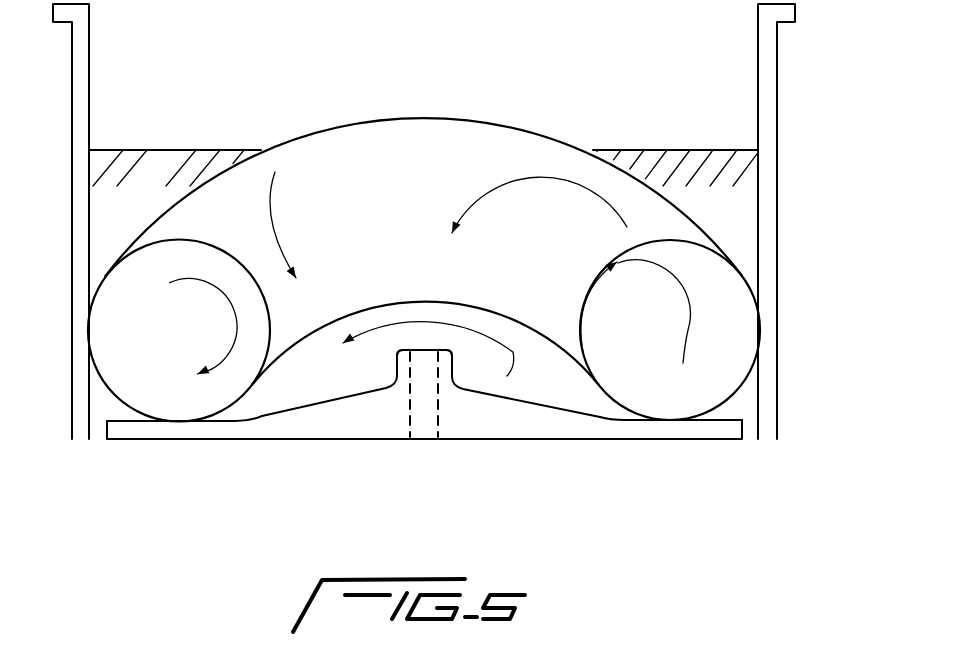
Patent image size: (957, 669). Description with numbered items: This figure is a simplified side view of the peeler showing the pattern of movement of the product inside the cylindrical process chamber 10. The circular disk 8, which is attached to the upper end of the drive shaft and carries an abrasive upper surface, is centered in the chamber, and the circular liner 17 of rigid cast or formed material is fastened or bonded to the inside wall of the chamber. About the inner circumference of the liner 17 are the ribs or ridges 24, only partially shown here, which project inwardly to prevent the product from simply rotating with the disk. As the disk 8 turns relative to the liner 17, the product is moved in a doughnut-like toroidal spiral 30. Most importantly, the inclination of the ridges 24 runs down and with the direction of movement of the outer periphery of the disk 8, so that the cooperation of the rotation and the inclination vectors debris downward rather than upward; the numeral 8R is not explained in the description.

The cylindrical process chamber 10 is at (727, 107).
The circular liner 17 is at (133, 149).
The ribs or ridges 24 is at (143, 173).
The circular disk 8 is at (327, 418).
The belt rib 8R is at (488, 333).
The toroidal spiral 30 is at (662, 392).